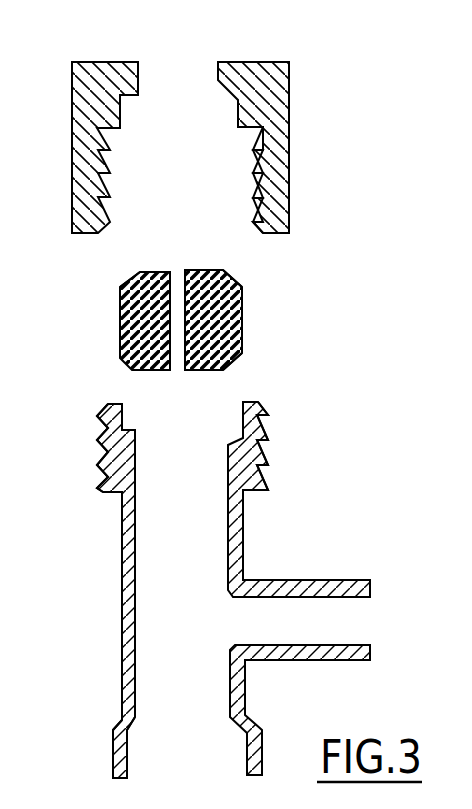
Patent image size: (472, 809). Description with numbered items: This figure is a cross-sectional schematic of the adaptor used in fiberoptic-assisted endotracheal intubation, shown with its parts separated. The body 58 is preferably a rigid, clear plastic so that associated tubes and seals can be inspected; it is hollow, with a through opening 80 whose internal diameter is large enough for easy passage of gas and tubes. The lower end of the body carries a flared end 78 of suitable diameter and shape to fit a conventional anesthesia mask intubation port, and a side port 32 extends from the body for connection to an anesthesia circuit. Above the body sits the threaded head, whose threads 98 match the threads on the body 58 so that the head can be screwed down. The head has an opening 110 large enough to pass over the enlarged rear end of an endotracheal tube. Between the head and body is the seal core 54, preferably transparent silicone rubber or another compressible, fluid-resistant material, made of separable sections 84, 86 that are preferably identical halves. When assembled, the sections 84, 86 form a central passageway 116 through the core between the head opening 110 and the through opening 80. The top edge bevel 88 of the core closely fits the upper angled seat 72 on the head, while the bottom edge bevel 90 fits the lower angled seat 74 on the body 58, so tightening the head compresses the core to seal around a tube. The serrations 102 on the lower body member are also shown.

The upper angled seat 72 is at (127, 94).
The opening 110 is at (218, 74).
The threads 98 is at (256, 163).
The central passageway 116 is at (178, 273).
The top edge bevel 88 is at (121, 284).
The separable section 84 is at (133, 327).
The seal core 54 is at (225, 278).
The separable section 86 is at (224, 327).
The bottom edge bevel 90 is at (240, 364).
The lower angled seat 74 is at (130, 435).
The through opening 80 is at (142, 578).
The flared end 78 is at (112, 757).
The serrations 102 is at (260, 457).
The body 58 is at (240, 542).
The side port 32 is at (301, 580).